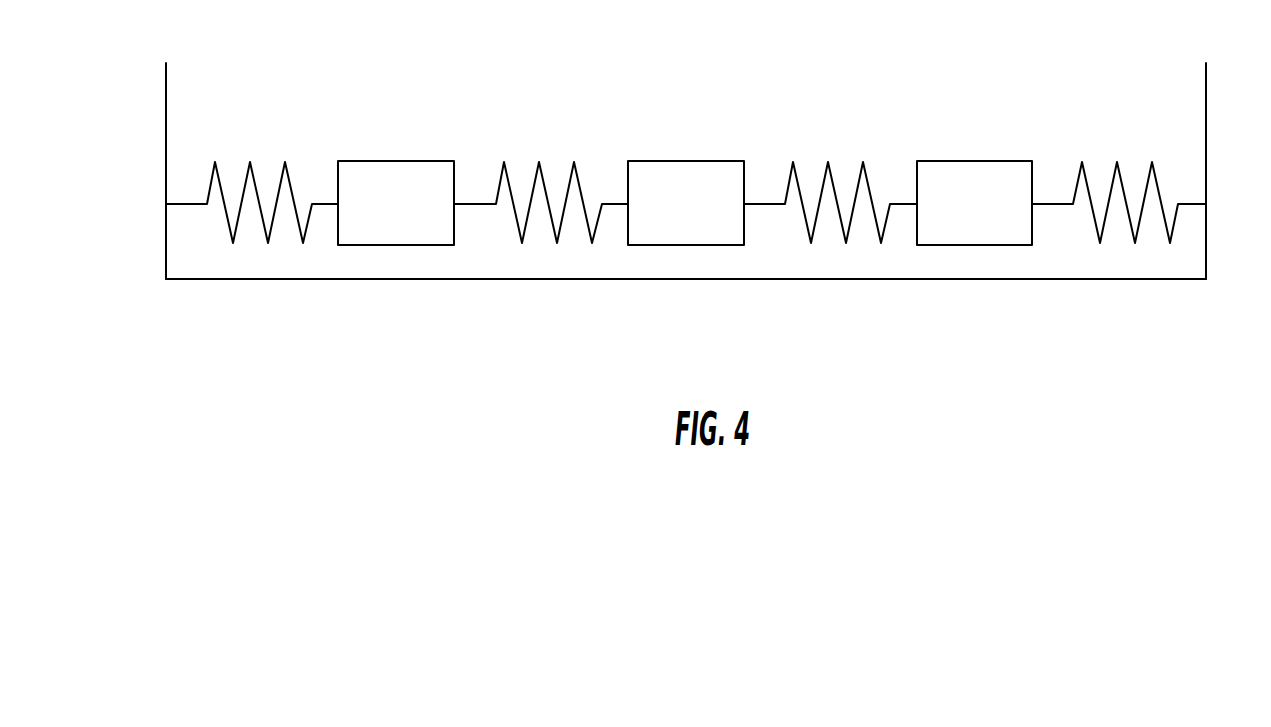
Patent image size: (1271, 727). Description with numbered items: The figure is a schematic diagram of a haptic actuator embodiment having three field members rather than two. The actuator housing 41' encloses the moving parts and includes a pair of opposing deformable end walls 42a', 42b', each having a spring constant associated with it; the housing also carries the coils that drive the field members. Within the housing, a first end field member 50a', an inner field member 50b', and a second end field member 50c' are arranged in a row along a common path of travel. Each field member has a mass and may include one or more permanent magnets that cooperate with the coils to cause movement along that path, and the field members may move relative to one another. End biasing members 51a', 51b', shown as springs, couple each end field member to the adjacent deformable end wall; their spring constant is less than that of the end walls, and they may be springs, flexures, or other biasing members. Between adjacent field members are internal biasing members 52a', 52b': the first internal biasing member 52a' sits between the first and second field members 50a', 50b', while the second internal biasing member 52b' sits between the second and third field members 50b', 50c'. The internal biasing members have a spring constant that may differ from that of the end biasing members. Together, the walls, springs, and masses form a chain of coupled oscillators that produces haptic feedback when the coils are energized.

The deformable end wall 42a' is at (134, 164).
The deformable end wall 42b' is at (1238, 164).
The actuator housing 41' is at (686, 321).
The end biasing member 51a' is at (252, 245).
The internal biasing member 52a' is at (541, 245).
The internal biasing member 52b' is at (830, 245).
The end biasing member 51b' is at (1119, 245).
The end field member 50a' is at (383, 171).
The inner field member 50b' is at (673, 171).
The end field member 50c' is at (962, 171).